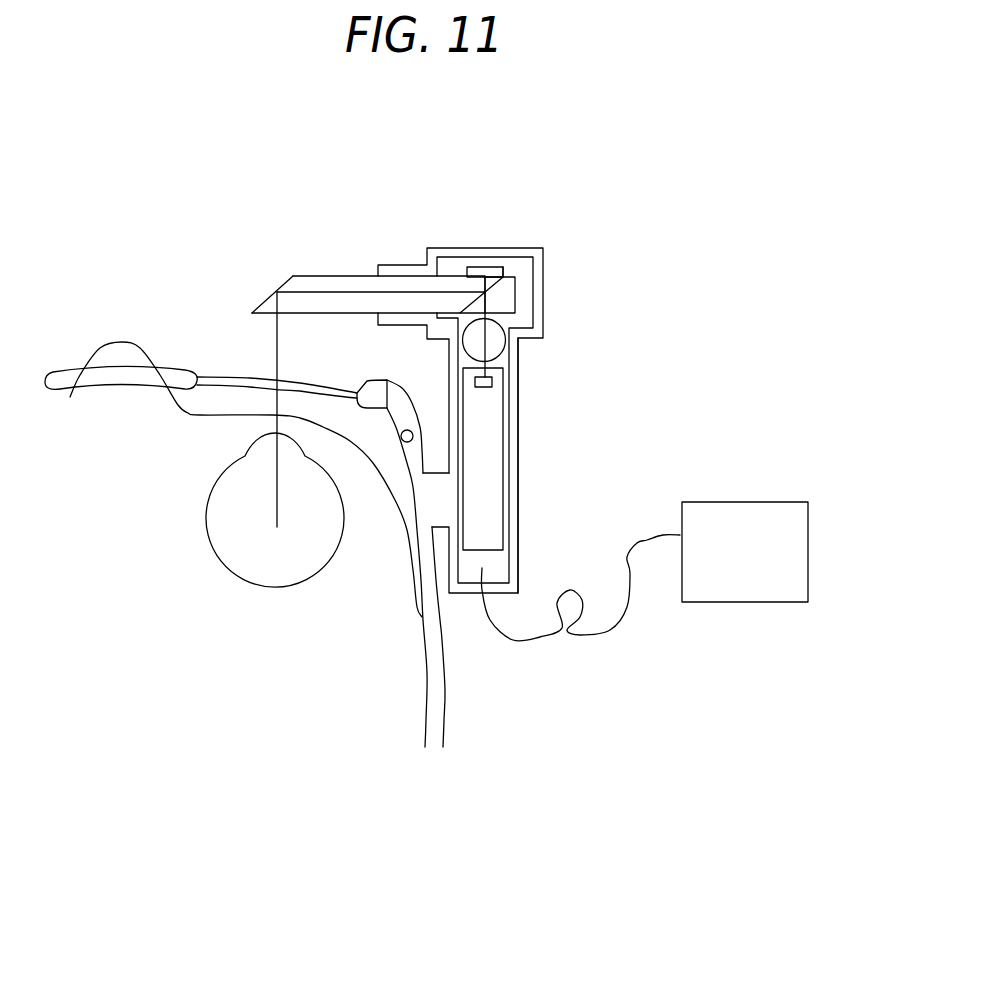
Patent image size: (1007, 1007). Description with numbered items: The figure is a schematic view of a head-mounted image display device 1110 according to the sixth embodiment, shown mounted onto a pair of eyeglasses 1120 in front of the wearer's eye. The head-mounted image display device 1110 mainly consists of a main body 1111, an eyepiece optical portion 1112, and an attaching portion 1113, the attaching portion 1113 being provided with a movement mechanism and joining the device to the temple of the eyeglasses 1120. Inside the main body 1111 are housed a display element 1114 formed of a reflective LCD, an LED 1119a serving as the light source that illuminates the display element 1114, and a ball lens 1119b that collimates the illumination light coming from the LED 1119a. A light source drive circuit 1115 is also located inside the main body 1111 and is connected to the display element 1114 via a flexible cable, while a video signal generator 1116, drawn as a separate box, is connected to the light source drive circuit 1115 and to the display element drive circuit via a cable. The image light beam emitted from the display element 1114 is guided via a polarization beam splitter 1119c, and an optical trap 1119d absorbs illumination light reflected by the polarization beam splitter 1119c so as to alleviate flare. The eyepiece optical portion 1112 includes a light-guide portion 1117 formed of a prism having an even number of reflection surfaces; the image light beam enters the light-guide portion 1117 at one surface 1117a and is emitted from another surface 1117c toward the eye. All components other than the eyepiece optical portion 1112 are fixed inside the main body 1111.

The head-mounted image display device 1110 is at (652, 155).
The main body 1111 is at (518, 438).
The eyepiece optical portion 1112 is at (240, 257).
The attaching portion 1113 is at (405, 263).
The display element 1114 is at (490, 270).
The light source drive circuit 1115 is at (485, 480).
The video signal generator 1116 is at (785, 588).
The light-guide portion 1117 is at (318, 285).
The one surface of the light-guide portion 1117a is at (348, 272).
The another surface of the light-guide portion 1117c is at (312, 315).
The LED 1119a is at (492, 382).
The ball lens 1119b is at (495, 348).
The polarization beam splitter 1119c is at (520, 283).
The optical trap 1119d is at (510, 302).
The eyeglasses 1120 is at (353, 738).